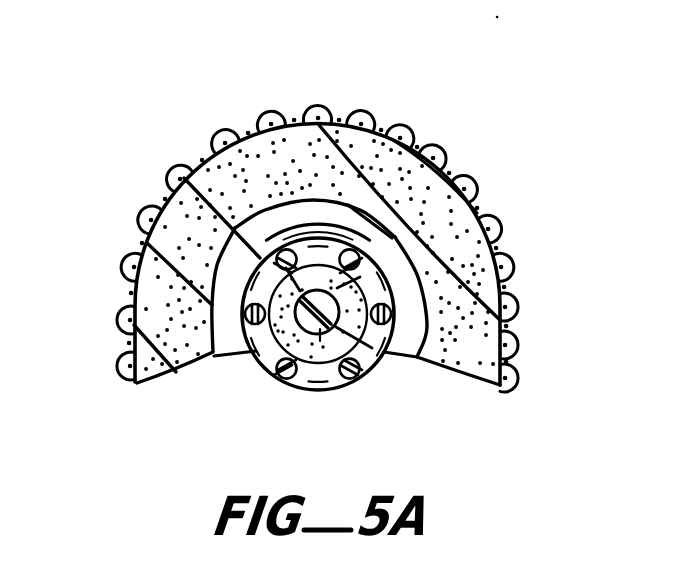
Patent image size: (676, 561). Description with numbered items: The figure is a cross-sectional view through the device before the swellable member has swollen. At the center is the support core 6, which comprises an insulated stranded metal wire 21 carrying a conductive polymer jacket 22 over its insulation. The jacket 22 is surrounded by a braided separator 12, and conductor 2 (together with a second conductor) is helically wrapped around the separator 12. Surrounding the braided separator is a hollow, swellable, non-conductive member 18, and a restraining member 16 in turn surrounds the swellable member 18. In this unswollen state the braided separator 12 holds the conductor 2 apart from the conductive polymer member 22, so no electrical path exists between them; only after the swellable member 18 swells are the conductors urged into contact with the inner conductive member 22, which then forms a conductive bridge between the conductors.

The restraining member 16 is at (333, 110).
The swellable member 18 is at (180, 237).
The conductor 2 is at (392, 240).
The braided separator 12 is at (230, 357).
The support core 6 is at (387, 350).
The conductive polymer jacket 22 is at (262, 366).
The insulated stranded metal wire 21 is at (333, 390).